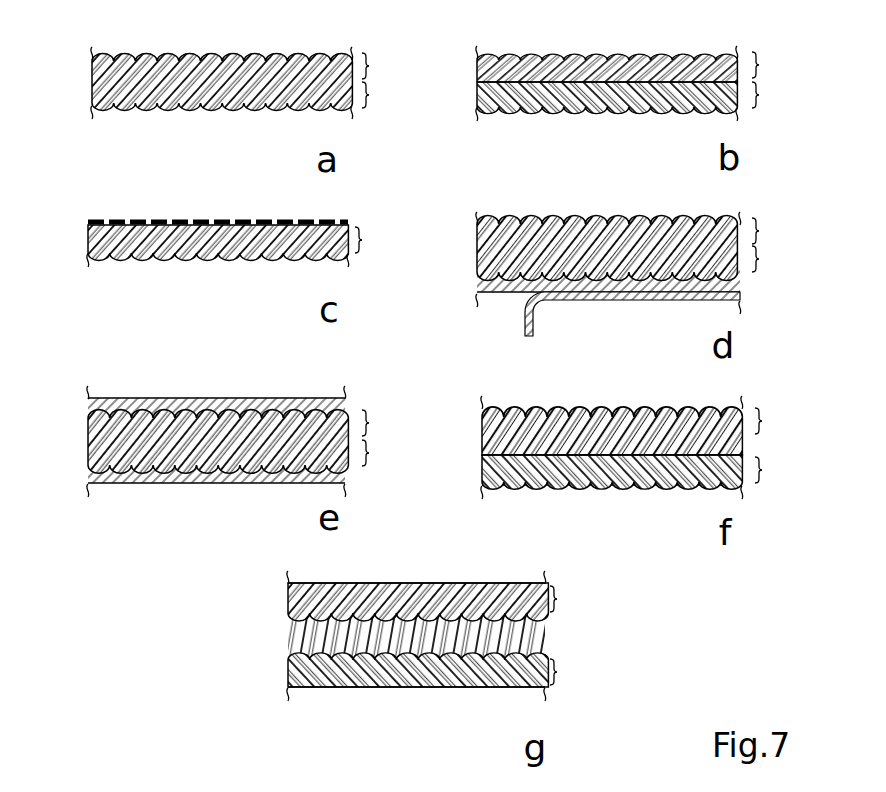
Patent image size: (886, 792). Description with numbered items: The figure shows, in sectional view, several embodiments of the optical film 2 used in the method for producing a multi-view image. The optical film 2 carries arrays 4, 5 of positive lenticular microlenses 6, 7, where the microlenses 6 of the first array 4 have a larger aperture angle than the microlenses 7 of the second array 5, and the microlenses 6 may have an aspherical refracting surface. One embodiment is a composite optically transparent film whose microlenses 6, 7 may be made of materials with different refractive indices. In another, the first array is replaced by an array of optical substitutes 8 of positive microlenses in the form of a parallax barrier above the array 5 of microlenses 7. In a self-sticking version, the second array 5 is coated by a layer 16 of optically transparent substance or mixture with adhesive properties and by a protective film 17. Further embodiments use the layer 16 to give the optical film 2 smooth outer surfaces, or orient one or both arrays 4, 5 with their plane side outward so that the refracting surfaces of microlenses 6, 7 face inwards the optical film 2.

The optical film 2 is at (188, 78).
The first array 4 is at (570, 332).
The second array 5 is at (567, 383).
The positive microlenses of the first array 6 is at (270, 55).
The positive microlenses of the second array 7 is at (140, 112).
The optical substitutes of positive microlenses 8 is at (135, 220).
The layer of optically transparent substance 16 is at (490, 288).
The protective film 17 is at (580, 300).